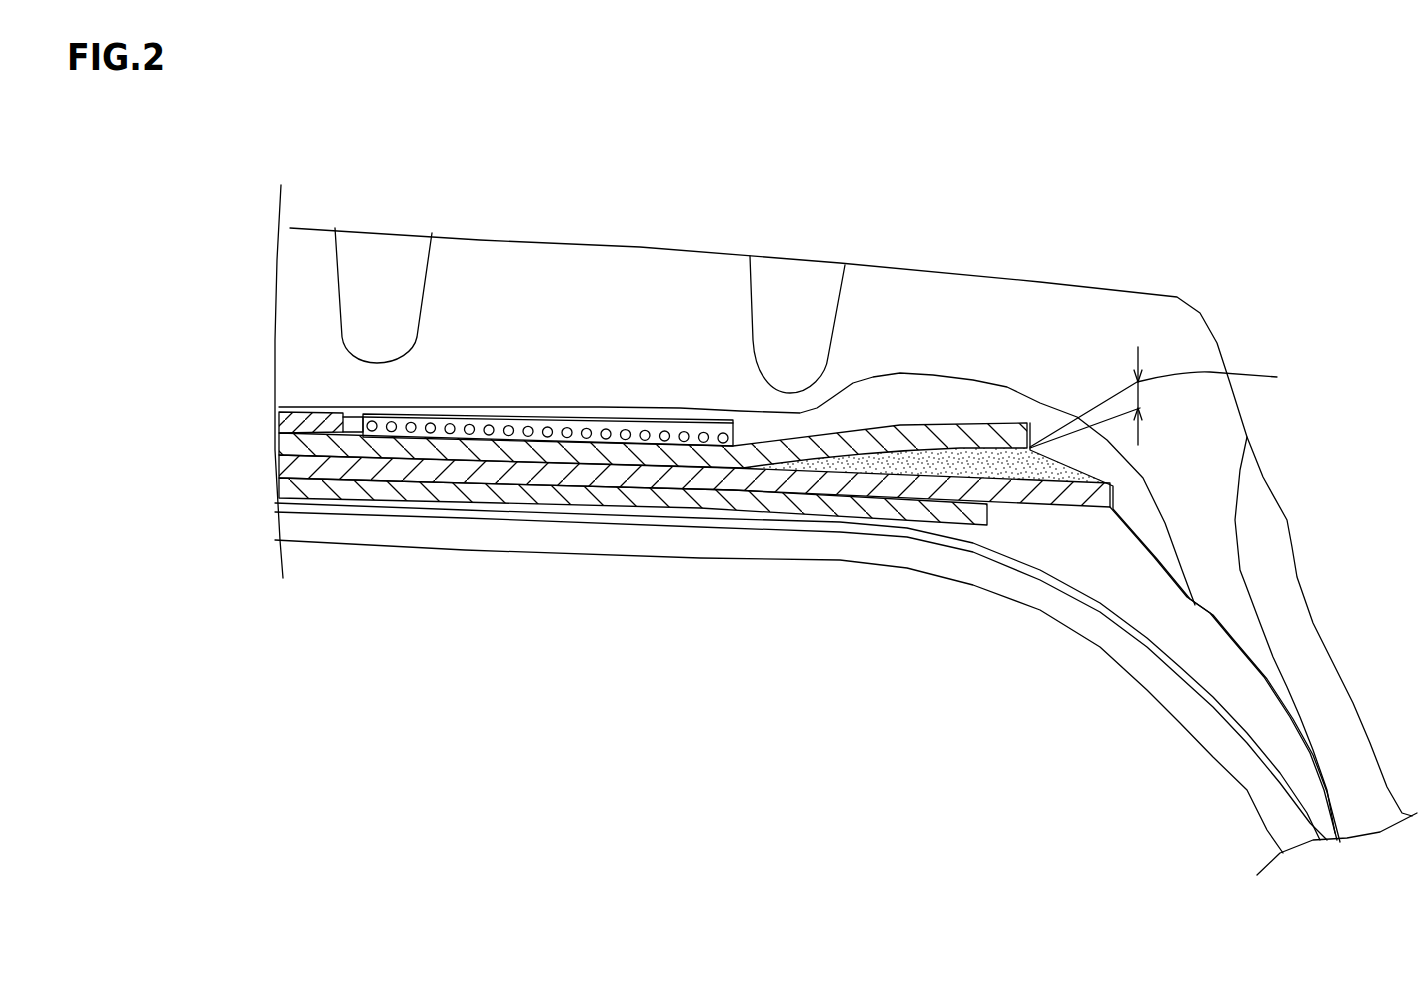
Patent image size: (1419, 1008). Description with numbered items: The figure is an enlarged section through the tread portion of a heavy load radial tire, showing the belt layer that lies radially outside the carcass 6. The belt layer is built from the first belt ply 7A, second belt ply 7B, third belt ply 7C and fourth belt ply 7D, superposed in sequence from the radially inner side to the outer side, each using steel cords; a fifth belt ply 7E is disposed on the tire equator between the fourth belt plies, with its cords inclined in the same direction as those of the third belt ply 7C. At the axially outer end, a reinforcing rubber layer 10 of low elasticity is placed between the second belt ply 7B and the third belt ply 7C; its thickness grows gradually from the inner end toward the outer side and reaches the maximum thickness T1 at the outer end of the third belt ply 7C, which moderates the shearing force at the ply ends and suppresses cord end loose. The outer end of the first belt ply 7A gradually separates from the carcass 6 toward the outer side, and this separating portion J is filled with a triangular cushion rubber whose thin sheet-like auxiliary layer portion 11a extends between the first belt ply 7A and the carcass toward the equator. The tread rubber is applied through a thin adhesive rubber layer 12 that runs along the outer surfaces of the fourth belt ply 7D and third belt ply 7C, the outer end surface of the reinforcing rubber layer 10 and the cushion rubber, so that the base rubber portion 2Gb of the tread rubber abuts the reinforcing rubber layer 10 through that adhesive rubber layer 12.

The first belt ply 7A is at (287, 490).
The second belt ply 7B is at (280, 465).
The third belt ply 7C is at (287, 445).
The fourth belt ply 7D is at (562, 427).
The fifth belt ply 7E is at (292, 423).
The reinforcing rubber layer 10 is at (965, 445).
The base rubber portion 2Gb is at (1038, 410).
The maximum thickness T1 is at (1190, 397).
The adhesive rubber layer 12 is at (1227, 630).
The carcass 6 is at (517, 520).
The auxiliary layer portion 11a is at (597, 512).
The separating portion J is at (958, 530).